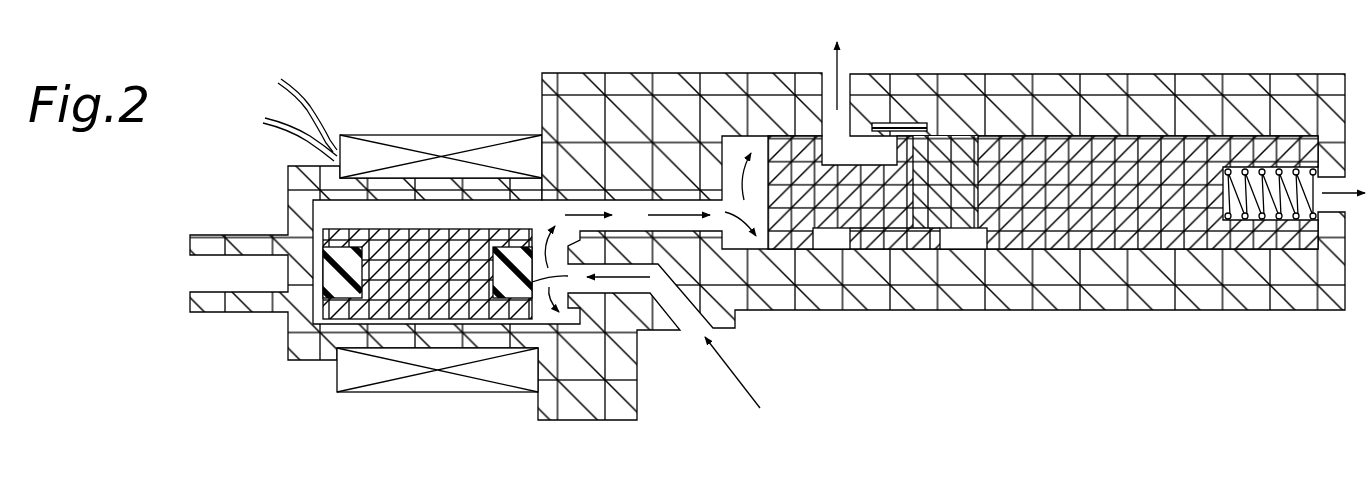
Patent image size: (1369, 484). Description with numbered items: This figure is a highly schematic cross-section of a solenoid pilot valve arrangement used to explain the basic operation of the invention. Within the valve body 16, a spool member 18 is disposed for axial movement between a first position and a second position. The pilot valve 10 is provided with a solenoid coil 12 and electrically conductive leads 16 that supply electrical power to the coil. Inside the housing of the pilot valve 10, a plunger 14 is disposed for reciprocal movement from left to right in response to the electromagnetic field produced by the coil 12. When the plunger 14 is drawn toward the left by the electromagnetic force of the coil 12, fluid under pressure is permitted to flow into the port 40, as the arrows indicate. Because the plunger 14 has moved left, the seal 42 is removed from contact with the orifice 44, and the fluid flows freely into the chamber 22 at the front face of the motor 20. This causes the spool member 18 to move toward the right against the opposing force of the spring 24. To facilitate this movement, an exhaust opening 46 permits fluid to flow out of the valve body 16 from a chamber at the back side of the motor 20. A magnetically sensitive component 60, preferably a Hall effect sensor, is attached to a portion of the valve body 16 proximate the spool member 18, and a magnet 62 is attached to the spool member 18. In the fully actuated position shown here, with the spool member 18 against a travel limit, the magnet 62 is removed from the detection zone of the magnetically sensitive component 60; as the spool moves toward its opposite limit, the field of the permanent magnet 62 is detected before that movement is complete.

The pilot valve 10 is at (287, 197).
The solenoid coil 12 is at (447, 143).
The plunger 14 is at (398, 307).
The valve body 16 is at (312, 103).
The spool member 18 is at (1143, 150).
The motor 20 is at (800, 227).
The chamber 22 is at (748, 150).
The spring 24 is at (1240, 213).
The port 40 is at (680, 317).
The seal 42 is at (668, 120).
The orifice 44 is at (520, 302).
The exhaust opening 46 is at (843, 80).
The magnetically sensitive component 60 is at (903, 117).
The magnet 62 is at (947, 217).